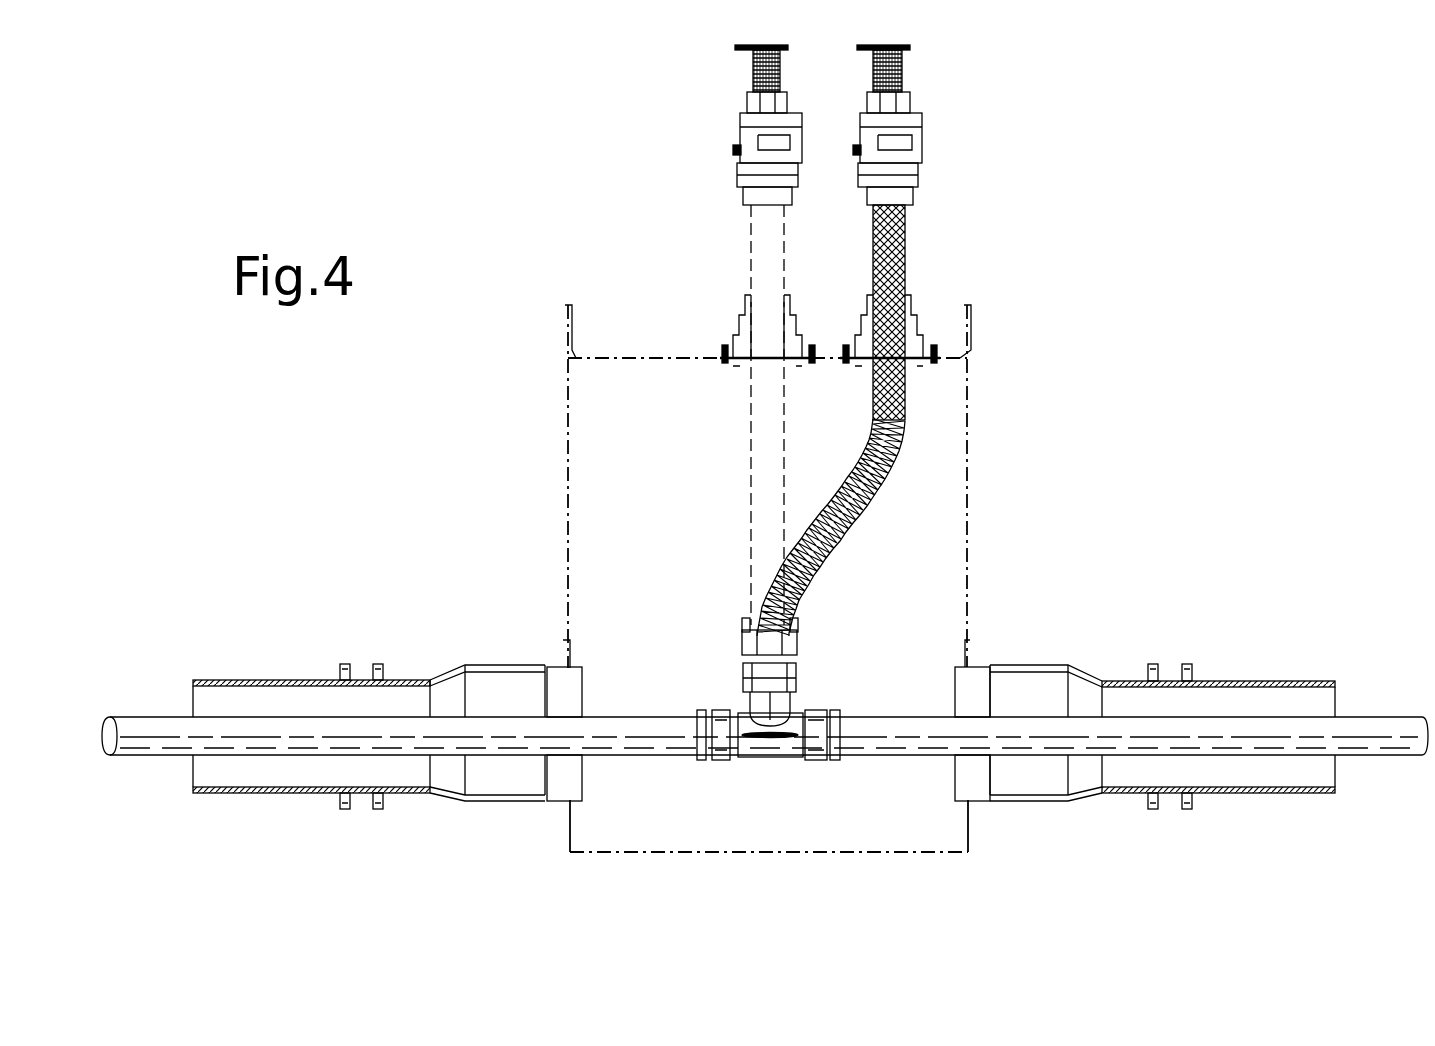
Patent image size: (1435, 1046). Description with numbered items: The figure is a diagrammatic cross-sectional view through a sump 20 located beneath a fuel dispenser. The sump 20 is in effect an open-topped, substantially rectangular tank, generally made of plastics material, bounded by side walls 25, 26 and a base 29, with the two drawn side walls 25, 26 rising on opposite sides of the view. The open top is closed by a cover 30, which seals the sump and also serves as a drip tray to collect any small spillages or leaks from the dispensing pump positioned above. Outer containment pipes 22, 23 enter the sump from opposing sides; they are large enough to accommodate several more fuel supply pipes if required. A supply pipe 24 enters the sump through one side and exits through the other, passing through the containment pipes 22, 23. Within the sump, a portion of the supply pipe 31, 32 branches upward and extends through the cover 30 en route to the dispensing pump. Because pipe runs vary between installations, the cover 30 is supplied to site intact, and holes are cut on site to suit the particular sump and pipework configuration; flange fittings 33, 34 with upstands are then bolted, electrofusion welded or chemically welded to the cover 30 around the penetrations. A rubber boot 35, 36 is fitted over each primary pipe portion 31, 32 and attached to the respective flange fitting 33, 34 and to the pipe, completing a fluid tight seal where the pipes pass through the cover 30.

The sump 20 is at (760, 585).
The outer containment pipe 22 is at (1300, 681).
The outer containment pipe 23 is at (298, 680).
The supply pipe 24 is at (150, 722).
The side wall 25 is at (975, 598).
The side wall 26 is at (566, 498).
The base 29 is at (822, 853).
The cover 30 is at (606, 358).
The supply pipe portion 31 is at (835, 515).
The supply pipe portion 32 is at (745, 410).
The plate fitting for pipe 32 33 is at (798, 365).
The plate fitting for hose 34 is at (917, 362).
The rubber boot 35 is at (761, 347).
The rubber boot 36 is at (933, 342).